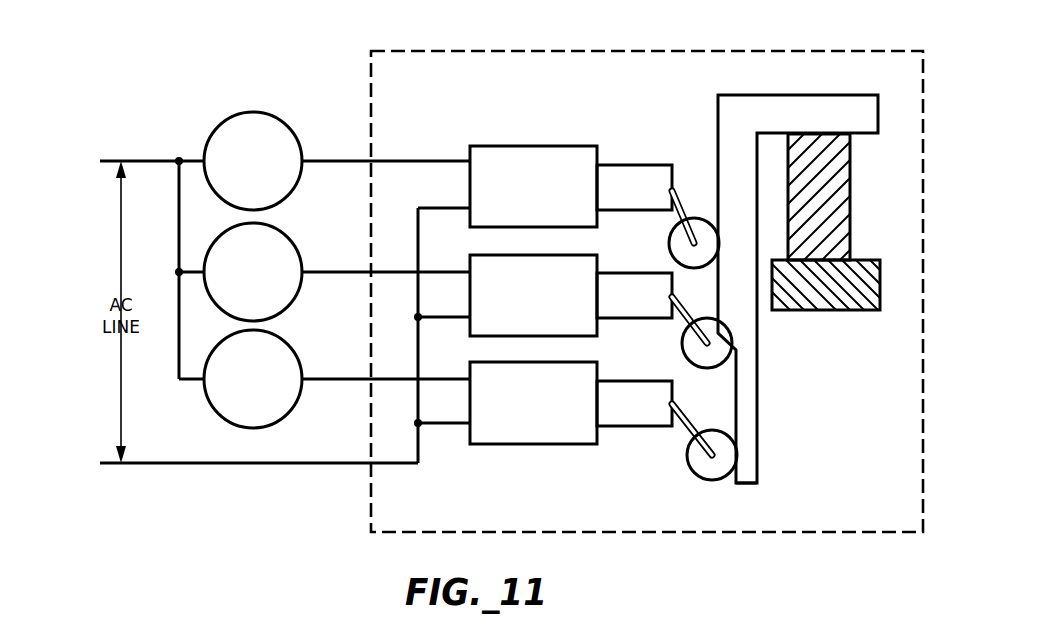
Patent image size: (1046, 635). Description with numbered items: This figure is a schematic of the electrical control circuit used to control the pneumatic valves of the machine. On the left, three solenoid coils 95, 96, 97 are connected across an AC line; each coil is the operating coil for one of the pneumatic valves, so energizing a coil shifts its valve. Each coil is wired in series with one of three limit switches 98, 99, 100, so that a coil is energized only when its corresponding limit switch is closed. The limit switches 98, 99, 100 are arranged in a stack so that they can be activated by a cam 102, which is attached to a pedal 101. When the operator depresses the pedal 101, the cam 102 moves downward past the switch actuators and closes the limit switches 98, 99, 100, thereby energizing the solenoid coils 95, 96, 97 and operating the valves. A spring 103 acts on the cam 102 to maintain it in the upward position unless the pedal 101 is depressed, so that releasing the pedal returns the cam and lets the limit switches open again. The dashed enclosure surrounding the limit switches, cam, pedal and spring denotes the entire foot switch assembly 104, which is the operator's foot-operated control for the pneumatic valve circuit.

The solenoid coil 95 is at (298, 187).
The solenoid coil 96 is at (298, 296).
The solenoid coil 97 is at (298, 402).
The limit switch 98 is at (647, 165).
The limit switch 99 is at (648, 273).
The limit switch 100 is at (653, 381).
The pedal 101 is at (770, 95).
The cam 102 is at (745, 484).
The spring 103 is at (850, 196).
The foot switch assembly 104 is at (370, 105).